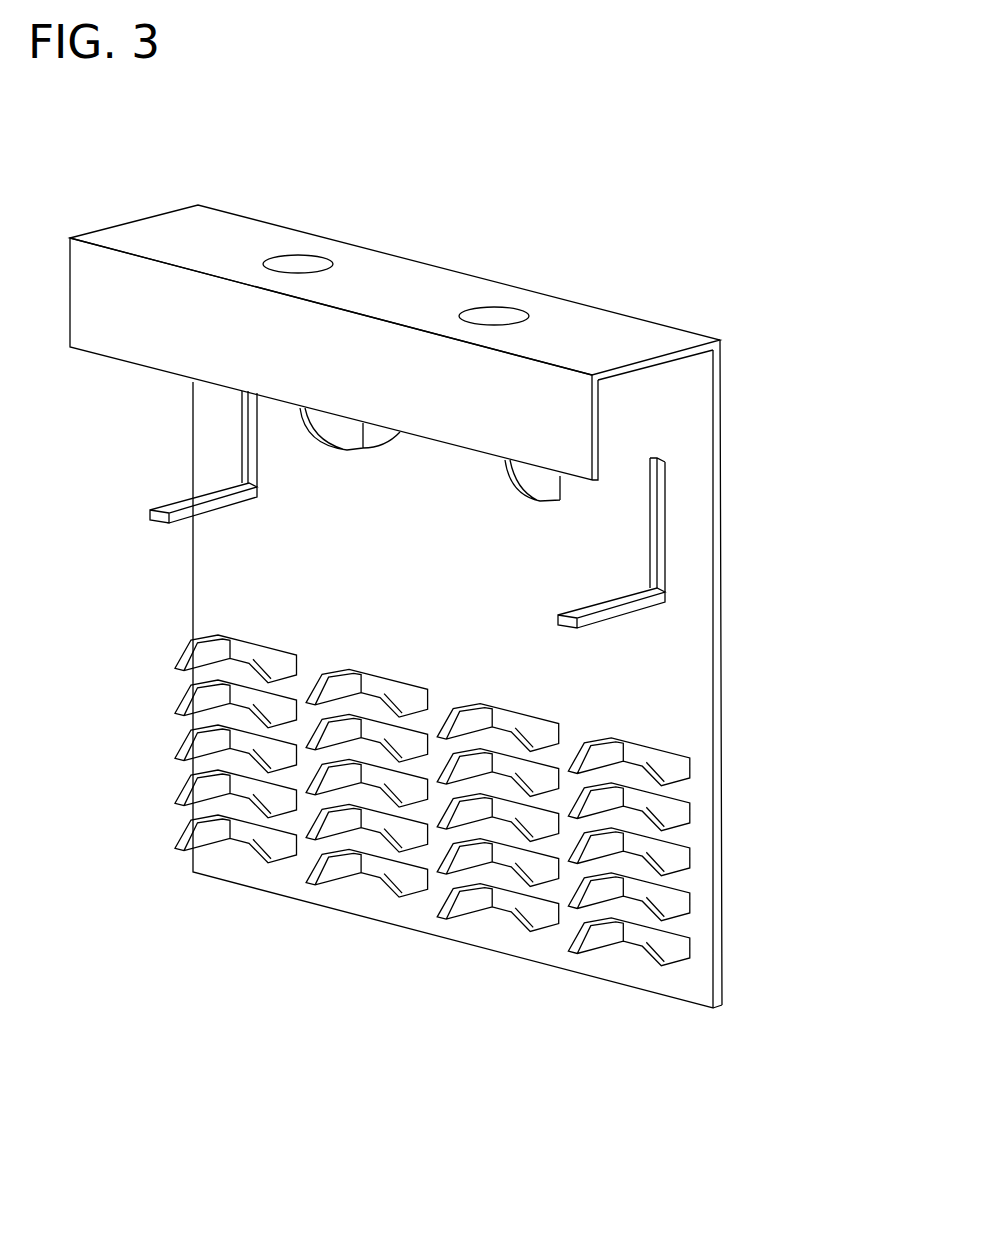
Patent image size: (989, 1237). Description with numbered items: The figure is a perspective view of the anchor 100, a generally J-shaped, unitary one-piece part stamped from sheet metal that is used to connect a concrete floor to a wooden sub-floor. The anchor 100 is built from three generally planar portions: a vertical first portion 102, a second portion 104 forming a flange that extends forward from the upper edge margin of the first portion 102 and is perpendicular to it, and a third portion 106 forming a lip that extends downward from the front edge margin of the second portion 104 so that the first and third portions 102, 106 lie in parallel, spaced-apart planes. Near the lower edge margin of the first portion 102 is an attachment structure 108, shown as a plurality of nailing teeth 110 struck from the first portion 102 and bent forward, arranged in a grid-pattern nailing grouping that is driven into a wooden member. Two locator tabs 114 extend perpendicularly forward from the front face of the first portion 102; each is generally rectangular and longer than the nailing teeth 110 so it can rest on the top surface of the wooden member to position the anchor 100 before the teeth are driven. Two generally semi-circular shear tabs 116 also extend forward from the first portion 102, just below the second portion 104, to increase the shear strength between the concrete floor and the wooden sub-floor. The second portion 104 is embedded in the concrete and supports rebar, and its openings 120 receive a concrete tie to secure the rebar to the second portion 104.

The anchor 100 is at (800, 300).
The first portion 102 is at (417, 594).
The second portion 104 is at (417, 303).
The third portion 106 is at (417, 383).
The attachment structure 108 is at (145, 833).
The nailing teeth 110 is at (598, 933).
The locator tab 114 is at (220, 504).
The shear tab 116 is at (345, 438).
The openings 120 is at (303, 270).